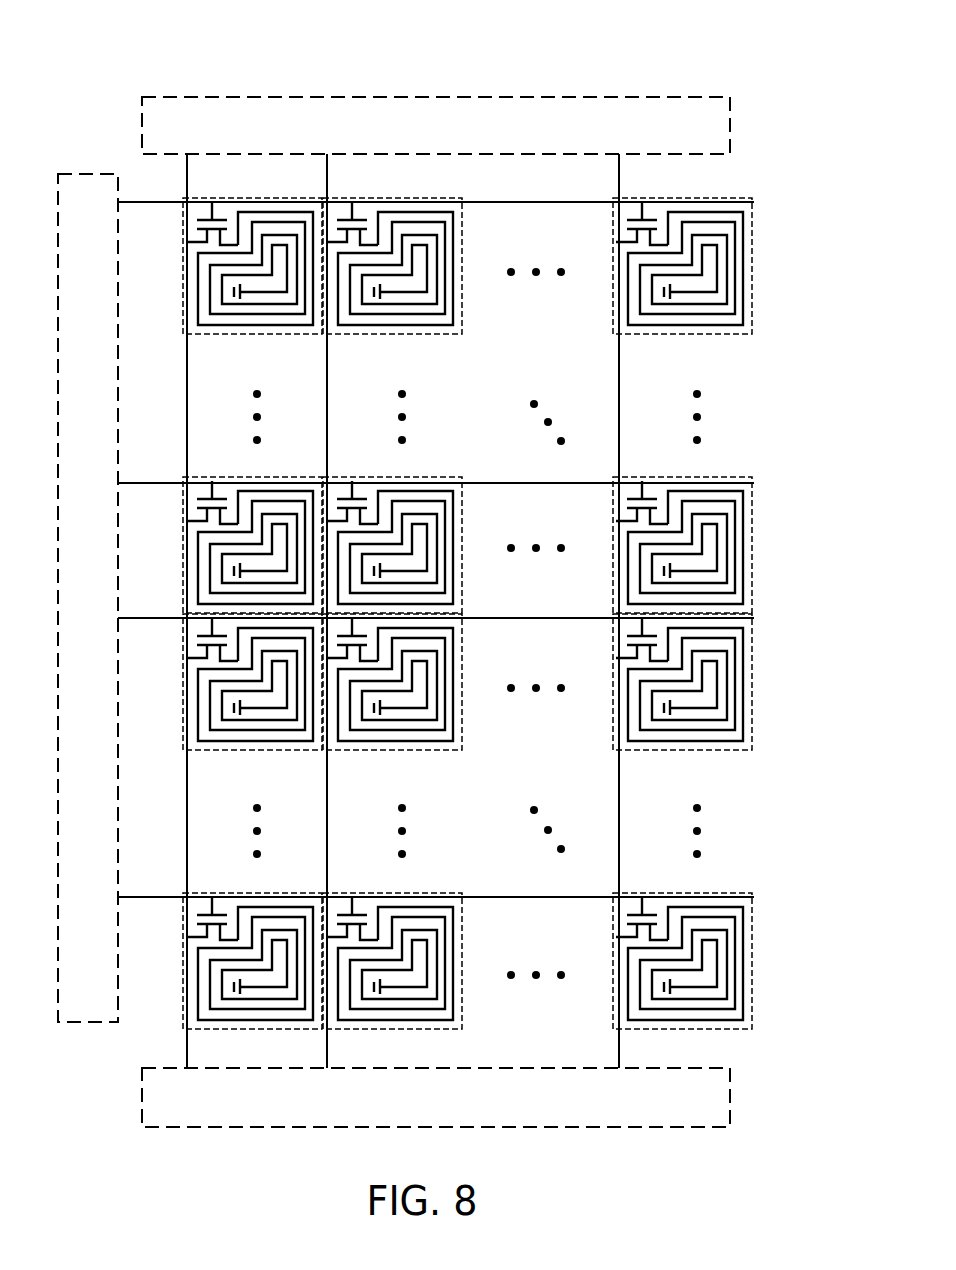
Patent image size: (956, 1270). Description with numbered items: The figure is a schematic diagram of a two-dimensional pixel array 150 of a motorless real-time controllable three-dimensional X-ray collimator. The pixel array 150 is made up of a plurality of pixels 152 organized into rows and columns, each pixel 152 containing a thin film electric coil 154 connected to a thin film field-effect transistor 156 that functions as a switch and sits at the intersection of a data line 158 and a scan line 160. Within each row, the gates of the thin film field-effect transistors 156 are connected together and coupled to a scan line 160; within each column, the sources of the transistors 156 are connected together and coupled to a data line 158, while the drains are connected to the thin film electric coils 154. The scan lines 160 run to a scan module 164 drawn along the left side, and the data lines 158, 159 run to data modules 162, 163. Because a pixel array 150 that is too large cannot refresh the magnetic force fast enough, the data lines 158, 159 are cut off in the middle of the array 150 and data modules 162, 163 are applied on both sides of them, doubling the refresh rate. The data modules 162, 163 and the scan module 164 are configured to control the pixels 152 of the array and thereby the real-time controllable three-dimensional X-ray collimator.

The 2D pixel array 150 is at (690, 56).
The pixel 152 is at (720, 551).
The thin film electric coil 154 is at (425, 510).
The thin film field-effect transistor 156 is at (342, 492).
The data line 158 is at (620, 430).
The data line 159 is at (620, 830).
The scan line 160 is at (148, 482).
The data module 162 is at (732, 122).
The data module 163 is at (732, 1098).
The scan module 164 is at (88, 173).